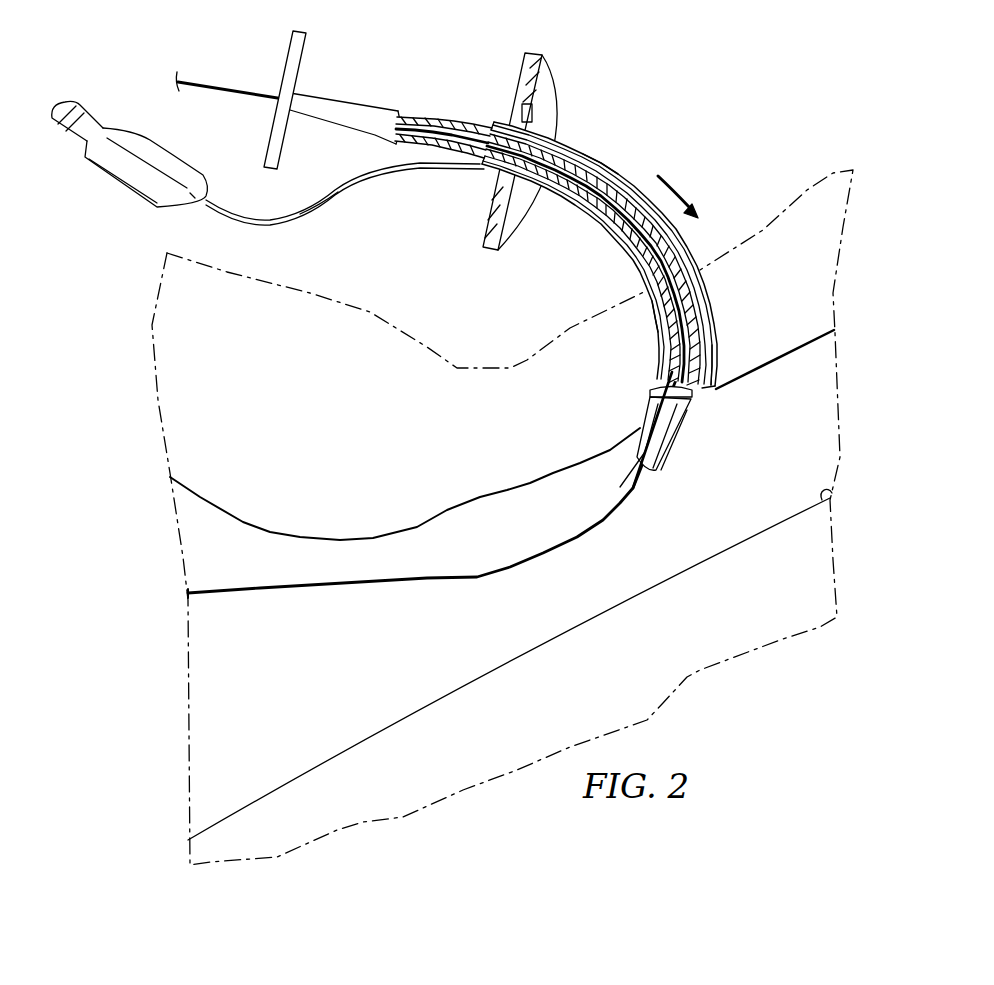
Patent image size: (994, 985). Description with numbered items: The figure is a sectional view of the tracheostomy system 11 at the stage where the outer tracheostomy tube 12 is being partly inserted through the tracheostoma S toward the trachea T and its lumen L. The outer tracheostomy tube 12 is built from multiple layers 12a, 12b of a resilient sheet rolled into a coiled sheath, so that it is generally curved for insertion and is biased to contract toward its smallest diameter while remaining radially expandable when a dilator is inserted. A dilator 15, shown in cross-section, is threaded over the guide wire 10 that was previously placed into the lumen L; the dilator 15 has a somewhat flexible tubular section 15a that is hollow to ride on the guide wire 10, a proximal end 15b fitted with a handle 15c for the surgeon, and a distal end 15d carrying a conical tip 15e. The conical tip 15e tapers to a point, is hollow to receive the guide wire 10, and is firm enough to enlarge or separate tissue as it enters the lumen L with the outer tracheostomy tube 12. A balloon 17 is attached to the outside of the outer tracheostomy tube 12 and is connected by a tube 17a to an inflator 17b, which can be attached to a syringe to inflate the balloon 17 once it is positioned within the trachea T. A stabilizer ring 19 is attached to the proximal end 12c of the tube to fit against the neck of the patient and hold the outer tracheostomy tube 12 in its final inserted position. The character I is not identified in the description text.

The guide wire 10 is at (360, 585).
The tracheostomy system 11 is at (684, 146).
The outer tracheostomy tube 12 is at (567, 228).
The layer 12a is at (489, 121).
The layer 12b is at (482, 123).
The proximal end 12c is at (598, 162).
The dilator 15 is at (360, 90).
The flexible tubular section 15a is at (404, 115).
The proximal end 15b is at (310, 118).
The handle 15c is at (297, 72).
The distal end 15d is at (654, 388).
The conical tip 15e is at (672, 440).
The balloon 17 is at (727, 356).
The tube 17a is at (438, 172).
The inflator 17b is at (123, 188).
The stabilizer ring 19 is at (549, 88).
The tracheostoma S is at (651, 337).
The trachea T is at (760, 528).
The lumen L is at (826, 496).
The inflation lumen I is at (320, 207).